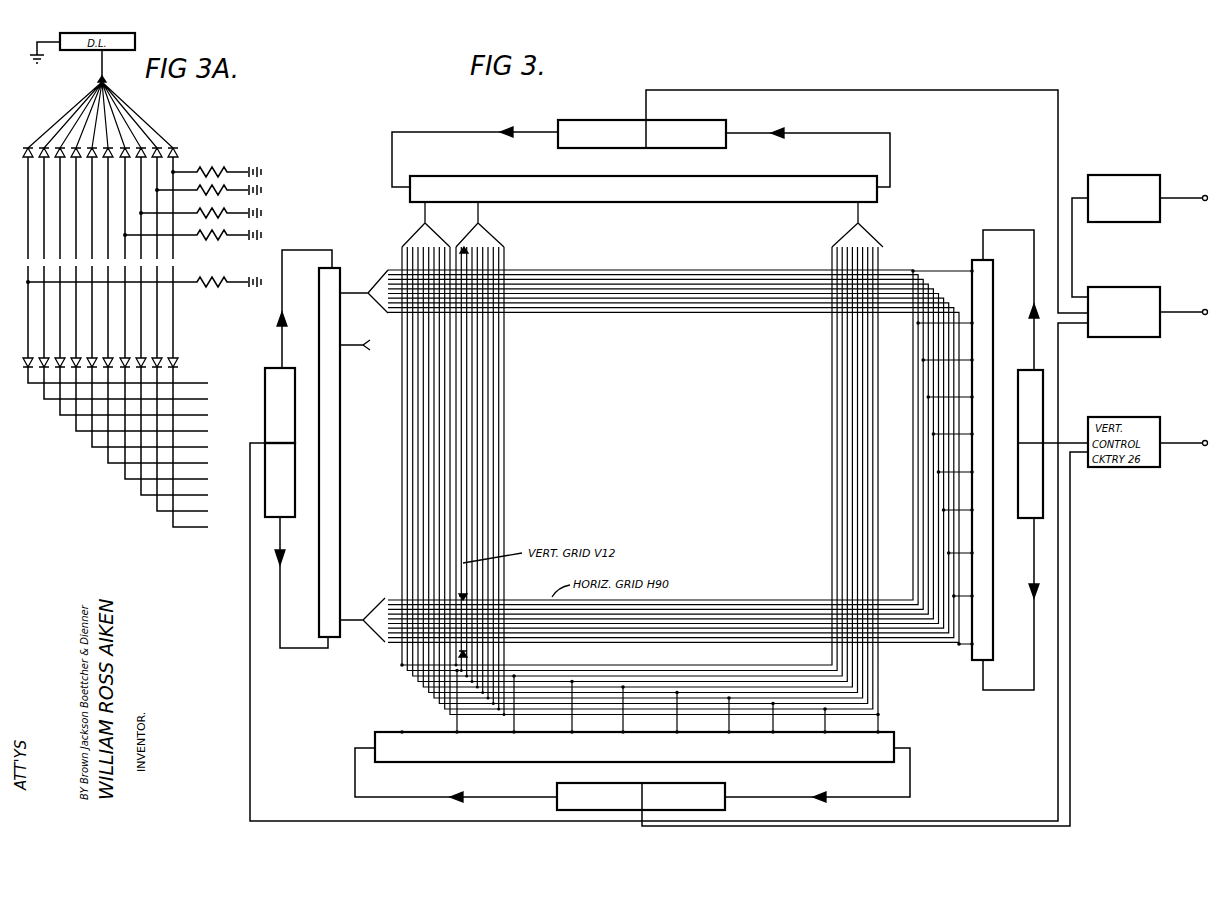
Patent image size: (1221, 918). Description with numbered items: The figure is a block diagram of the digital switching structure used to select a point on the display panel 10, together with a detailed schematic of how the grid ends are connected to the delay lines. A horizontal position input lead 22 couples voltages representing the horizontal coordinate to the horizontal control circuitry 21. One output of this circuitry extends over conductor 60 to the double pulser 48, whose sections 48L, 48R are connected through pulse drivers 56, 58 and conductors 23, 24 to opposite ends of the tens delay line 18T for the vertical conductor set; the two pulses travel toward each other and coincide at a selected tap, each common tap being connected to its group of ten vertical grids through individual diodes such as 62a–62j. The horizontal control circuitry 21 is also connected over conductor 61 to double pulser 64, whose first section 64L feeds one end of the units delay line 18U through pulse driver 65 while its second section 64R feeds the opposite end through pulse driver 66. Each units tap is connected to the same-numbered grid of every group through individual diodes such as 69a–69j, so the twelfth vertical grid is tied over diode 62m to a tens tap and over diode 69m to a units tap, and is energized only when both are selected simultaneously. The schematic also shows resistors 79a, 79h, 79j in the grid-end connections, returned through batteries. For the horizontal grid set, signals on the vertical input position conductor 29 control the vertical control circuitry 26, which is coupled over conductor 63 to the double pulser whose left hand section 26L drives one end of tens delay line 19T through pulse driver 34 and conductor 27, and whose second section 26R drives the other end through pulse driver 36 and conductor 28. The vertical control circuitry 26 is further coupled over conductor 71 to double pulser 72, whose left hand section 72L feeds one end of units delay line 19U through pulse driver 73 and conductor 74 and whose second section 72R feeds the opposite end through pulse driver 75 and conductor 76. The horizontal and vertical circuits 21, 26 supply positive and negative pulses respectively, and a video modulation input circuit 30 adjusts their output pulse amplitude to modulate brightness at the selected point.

In FIG. 3A, the diode 62a is at (27, 148).
In FIG. 3A, the diode 62j is at (177, 146).
In FIG. 3, the diode 62m is at (466, 250).
In FIG. 3A, the diode 69a is at (28, 369).
In FIG. 3A, the diode 69j is at (178, 364).
In FIG. 3, the diode 69m is at (464, 656).
In FIG. 3A, the resistor 79a is at (209, 283).
In FIG. 3A, the resistor 79h is at (230, 212).
In FIG. 3A, the resistor 79j is at (230, 168).
In FIG. 3, the display panel 10 is at (745, 502).
In FIG. 3, the tens delay line 18T is at (877, 204).
In FIG. 3, the units delay line 18U is at (634, 747).
In FIG. 3, the tens delay line 19T is at (340, 509).
In FIG. 3, the units delay line 19U is at (990, 582).
In FIG. 3, the horizontal control circuitry 21 is at (1124, 312).
In FIG. 3, the horizontal position input lead 22 is at (1186, 344).
In FIG. 3, the conductor 23 is at (392, 167).
In FIG. 3, the conductor 24 is at (893, 166).
In FIG. 3, the vertical control circuitry 26 is at (315, 440).
In FIG. 3, the left hand section of double pulser 26L is at (265, 404).
In FIG. 3, the second section of double pulser 26R is at (270, 501).
In FIG. 3, the conductor 27 is at (308, 250).
In FIG. 3, the conductor 28 is at (296, 649).
In FIG. 3, the vertical input position conductor 29 is at (1184, 477).
In FIG. 3, the video modulation input circuit 30 is at (1140, 236).
In FIG. 3, the pulse driver 34 is at (282, 325).
In FIG. 3, the pulse driver 36 is at (283, 556).
In FIG. 3, the double pulser 48 is at (653, 167).
In FIG. 3, the double pulser section 48L is at (585, 120).
In FIG. 3, the double pulser section 48R is at (686, 120).
In FIG. 3, the pulse driver 56 is at (506, 130).
In FIG. 3, the pulse driver 58 is at (780, 138).
In FIG. 3, the conductor 60 is at (1002, 98).
In FIG. 3, the conductor 61 is at (945, 820).
In FIG. 3, the conductor 63 is at (250, 626).
In FIG. 3, the double pulser 64 is at (656, 779).
In FIG. 3, the first section of double pulser 64L is at (557, 789).
In FIG. 3, the second section of double pulser 64R is at (725, 793).
In FIG. 3, the pulse driver 65 is at (457, 796).
In FIG. 3, the pulse driver 66 is at (824, 794).
In FIG. 3, the conductor 71 is at (1068, 440).
In FIG. 3, the double pulser 72 is at (1014, 450).
In FIG. 3, the second section of double pulser 72R is at (1031, 370).
In FIG. 3, the left hand section of double pulser 72L is at (1021, 518).
In FIG. 3, the pulse driver 73 is at (1028, 596).
In FIG. 3, the conductor 74 is at (1009, 691).
In FIG. 3, the pulse driver 75 is at (1029, 321).
In FIG. 3, the conductor 76 is at (1018, 224).